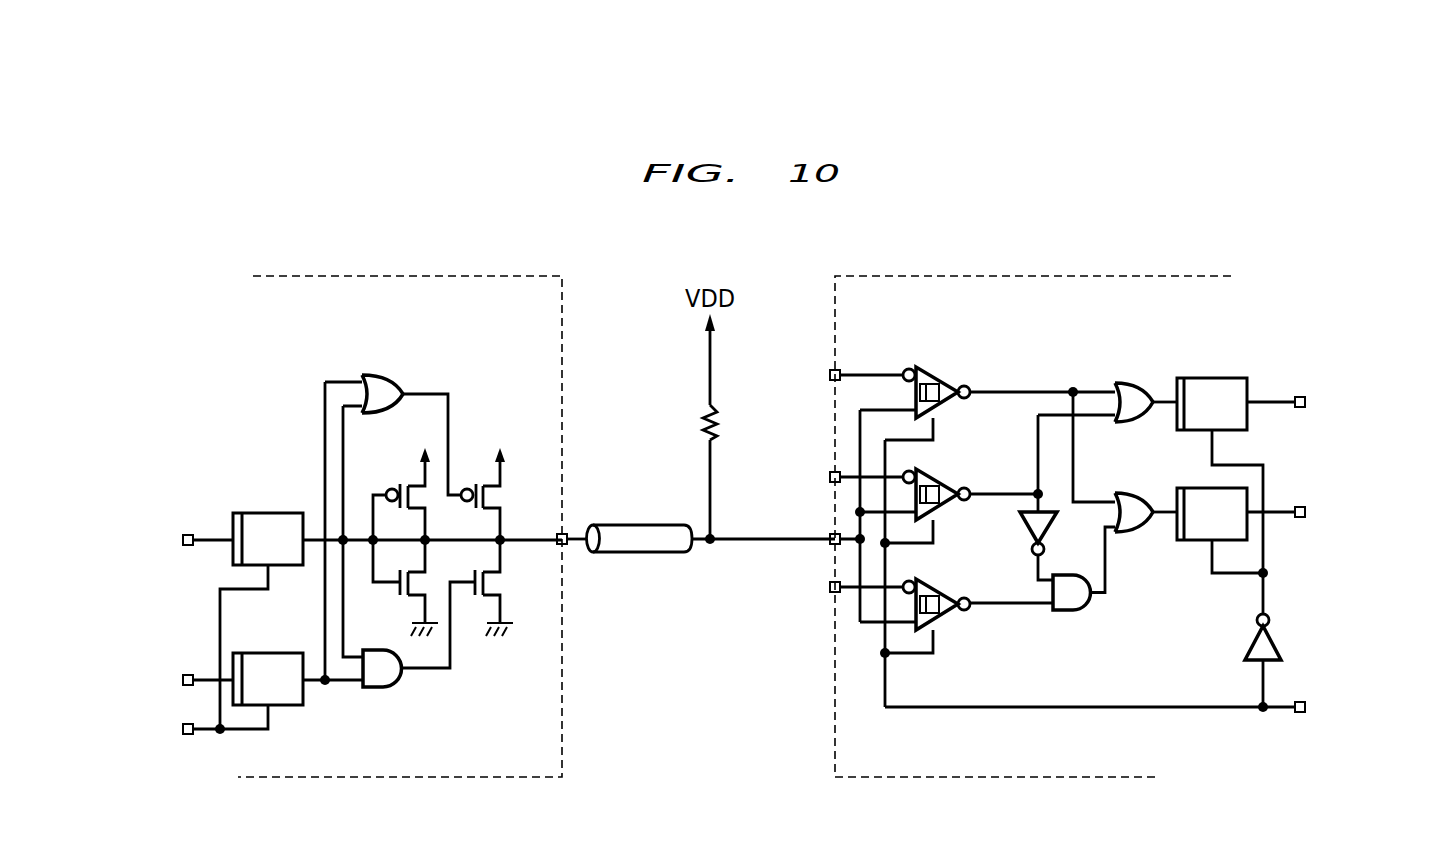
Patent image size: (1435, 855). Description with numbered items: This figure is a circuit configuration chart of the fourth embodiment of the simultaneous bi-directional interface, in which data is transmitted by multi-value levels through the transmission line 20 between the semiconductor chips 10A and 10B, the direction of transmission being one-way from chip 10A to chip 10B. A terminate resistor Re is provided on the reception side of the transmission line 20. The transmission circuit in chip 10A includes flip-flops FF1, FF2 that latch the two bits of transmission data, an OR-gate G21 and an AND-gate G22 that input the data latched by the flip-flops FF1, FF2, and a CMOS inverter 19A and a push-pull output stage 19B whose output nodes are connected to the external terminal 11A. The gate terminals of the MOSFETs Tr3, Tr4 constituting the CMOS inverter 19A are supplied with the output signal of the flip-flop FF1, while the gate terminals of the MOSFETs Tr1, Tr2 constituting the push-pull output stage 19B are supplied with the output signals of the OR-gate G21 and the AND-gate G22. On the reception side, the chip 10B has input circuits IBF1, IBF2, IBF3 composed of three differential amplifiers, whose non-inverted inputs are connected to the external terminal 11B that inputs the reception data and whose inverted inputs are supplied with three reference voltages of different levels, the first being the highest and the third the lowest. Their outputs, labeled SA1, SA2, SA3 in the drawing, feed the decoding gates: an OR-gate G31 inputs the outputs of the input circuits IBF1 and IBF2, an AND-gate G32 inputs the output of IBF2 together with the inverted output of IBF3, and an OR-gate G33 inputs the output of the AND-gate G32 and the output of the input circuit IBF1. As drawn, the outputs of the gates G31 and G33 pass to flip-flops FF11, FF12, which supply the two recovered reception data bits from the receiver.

The semiconductor chip 10A is at (380, 276).
The semiconductor chip 10B is at (1166, 276).
The external terminal 11A is at (568, 546).
The external terminal 11B is at (828, 546).
The transmission line 20 is at (620, 525).
The CMOS inverter 19A is at (428, 650).
The push-pull output stage 19B is at (510, 645).
The terminate resistor Re is at (691, 426).
The flip-flop FF1 is at (268, 539).
The flip-flop FF2 is at (268, 679).
The OR-gate G21 is at (378, 373).
The AND-gate G22 is at (385, 690).
The MOSFET Tr1 is at (501, 494).
The MOSFET Tr2 is at (508, 588).
The MOSFET Tr3 is at (401, 494).
The MOSFET Tr4 is at (403, 588).
The input circuit IBF1 is at (937, 373).
The input circuit IBF2 is at (946, 481).
The input circuit IBF3 is at (946, 590).
The sense output 1 SA1 is at (1042, 431).
The sense output 2 SA2 is at (1042, 497).
The sense output 3 SA3 is at (1011, 588).
The OR-gate G31 is at (1133, 384).
The AND-gate G32 is at (1072, 613).
The OR-gate G33 is at (1133, 494).
The flip-flop for RDATA-A FF11 is at (1212, 404).
The flip-flop for RDATA-B FF12 is at (1212, 514).